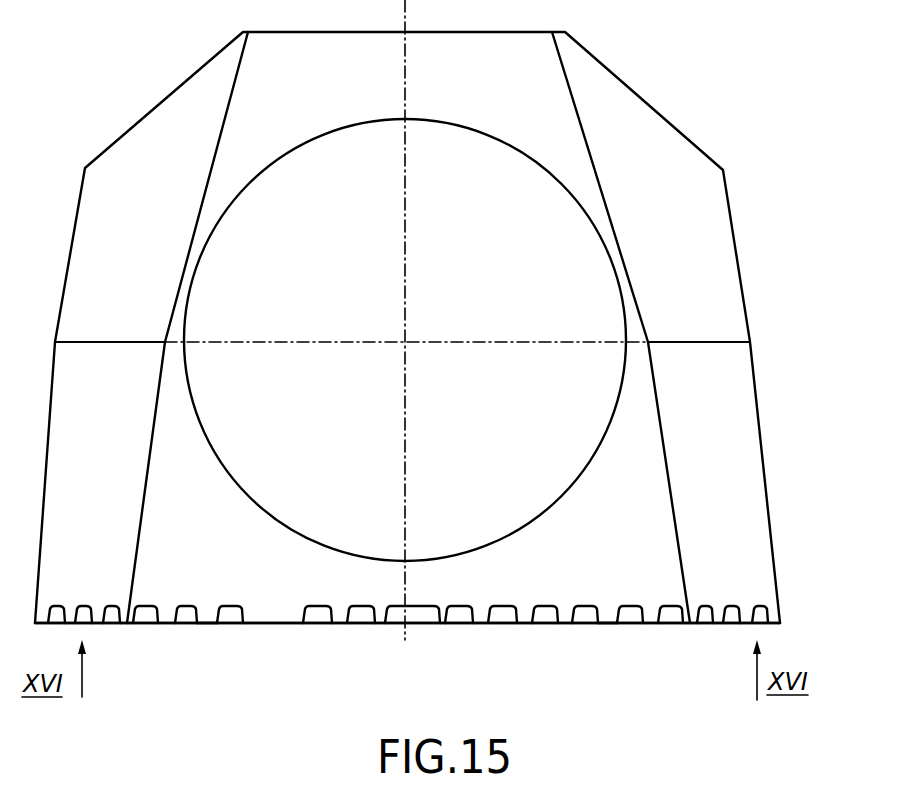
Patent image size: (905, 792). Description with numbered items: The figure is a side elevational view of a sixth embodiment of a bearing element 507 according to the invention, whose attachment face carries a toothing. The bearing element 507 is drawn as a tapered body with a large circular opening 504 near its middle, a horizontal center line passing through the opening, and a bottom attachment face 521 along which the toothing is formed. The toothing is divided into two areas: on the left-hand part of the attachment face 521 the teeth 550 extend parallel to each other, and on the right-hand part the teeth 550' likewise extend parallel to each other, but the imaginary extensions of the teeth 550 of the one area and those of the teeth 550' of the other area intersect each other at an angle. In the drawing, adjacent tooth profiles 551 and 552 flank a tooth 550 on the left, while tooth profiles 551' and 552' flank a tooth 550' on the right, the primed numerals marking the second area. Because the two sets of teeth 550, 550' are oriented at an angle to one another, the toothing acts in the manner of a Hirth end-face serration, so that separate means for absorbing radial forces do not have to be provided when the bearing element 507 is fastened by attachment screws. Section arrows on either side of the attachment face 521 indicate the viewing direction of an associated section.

The bearing element 507 is at (648, 135).
The circular bore 504 is at (524, 158).
The bottom surface 521 is at (487, 623).
The tooth 551 is at (173, 644).
The teeth 550 is at (209, 667).
The tooth 552 is at (255, 645).
The tooth 551' is at (570, 649).
The teeth 550' is at (602, 675).
The tooth 552' is at (651, 649).